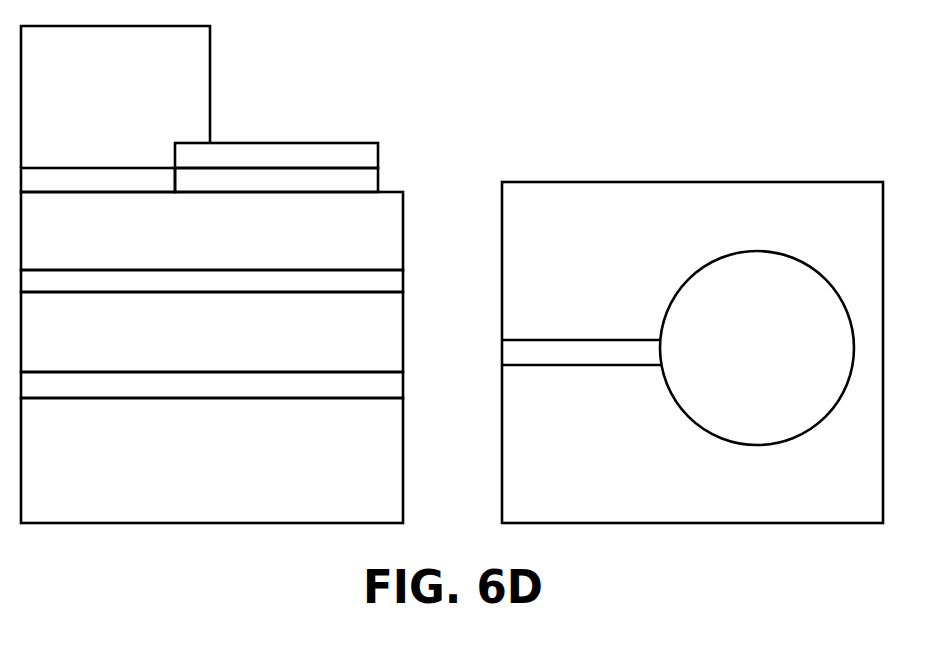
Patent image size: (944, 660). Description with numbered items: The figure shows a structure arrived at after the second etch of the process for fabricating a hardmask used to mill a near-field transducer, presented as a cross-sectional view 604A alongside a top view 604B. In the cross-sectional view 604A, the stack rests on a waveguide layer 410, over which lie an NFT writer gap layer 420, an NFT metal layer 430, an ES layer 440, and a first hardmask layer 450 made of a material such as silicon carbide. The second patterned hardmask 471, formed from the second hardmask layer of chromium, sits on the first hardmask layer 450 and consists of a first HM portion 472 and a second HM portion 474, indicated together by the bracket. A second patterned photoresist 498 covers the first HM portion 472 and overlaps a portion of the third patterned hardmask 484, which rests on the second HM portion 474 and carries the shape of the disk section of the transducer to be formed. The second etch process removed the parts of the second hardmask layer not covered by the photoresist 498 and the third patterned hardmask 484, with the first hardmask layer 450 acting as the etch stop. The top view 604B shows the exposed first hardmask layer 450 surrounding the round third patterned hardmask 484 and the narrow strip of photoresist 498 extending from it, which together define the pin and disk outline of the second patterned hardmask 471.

The cross-sectional view of structure 604A is at (311, 43).
The top view of structure 604B is at (513, 159).
The second patterned photoresist (PR #2) 498 is at (341, 195).
The first HM portion 472 is at (98, 180).
The third patterned hardmask 484 is at (514, 294).
The second HM portion 474 is at (276, 180).
The second patterned hardmask 471 is at (408, 168).
The first hardmask layer 450 is at (452, 352).
The ES layer 440 is at (212, 281).
The NFT metal layer 430 is at (212, 332).
The NFT writer gap layer 420 is at (212, 385).
The waveguide layer 410 is at (212, 460).